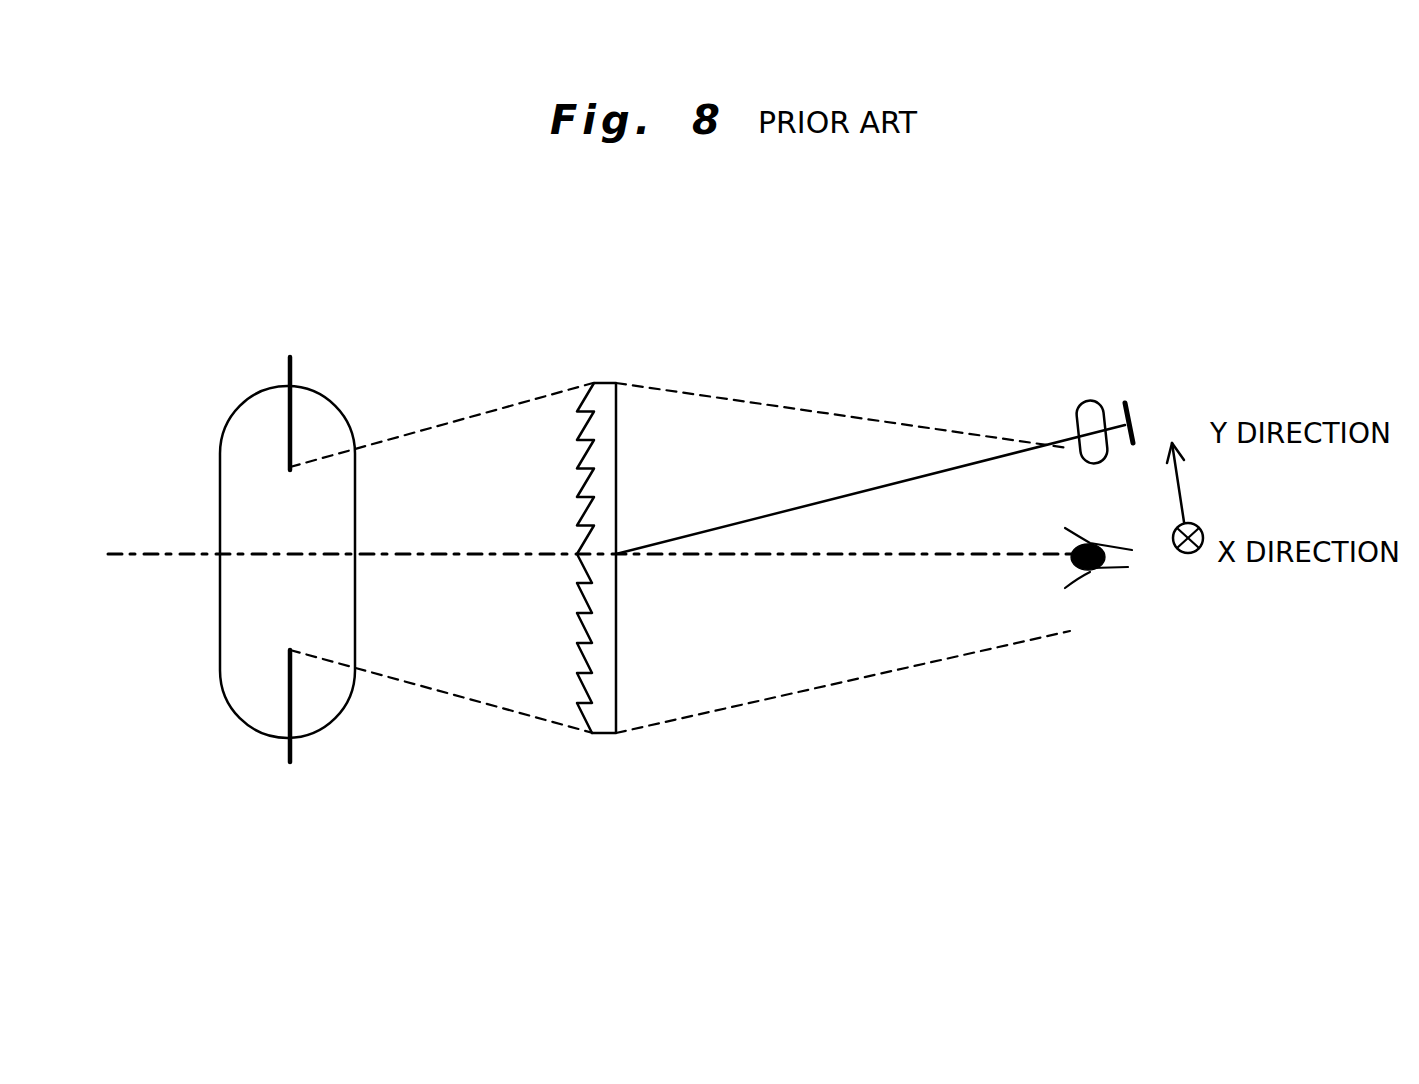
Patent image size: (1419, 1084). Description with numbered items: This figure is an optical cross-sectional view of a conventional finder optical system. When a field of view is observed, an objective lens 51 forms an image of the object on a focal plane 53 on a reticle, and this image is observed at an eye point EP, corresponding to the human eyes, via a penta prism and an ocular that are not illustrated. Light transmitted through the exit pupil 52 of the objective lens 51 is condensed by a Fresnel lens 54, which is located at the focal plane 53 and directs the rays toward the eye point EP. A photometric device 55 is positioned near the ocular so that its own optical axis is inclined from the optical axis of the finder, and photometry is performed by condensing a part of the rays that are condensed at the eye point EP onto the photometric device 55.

The objective lens 51 is at (255, 717).
The exit pupil 52 is at (288, 377).
The focal plane 53 is at (616, 712).
The Fresnel lens 54 is at (578, 712).
The photometric device 55 is at (1110, 405).
The eye point EP is at (1093, 572).